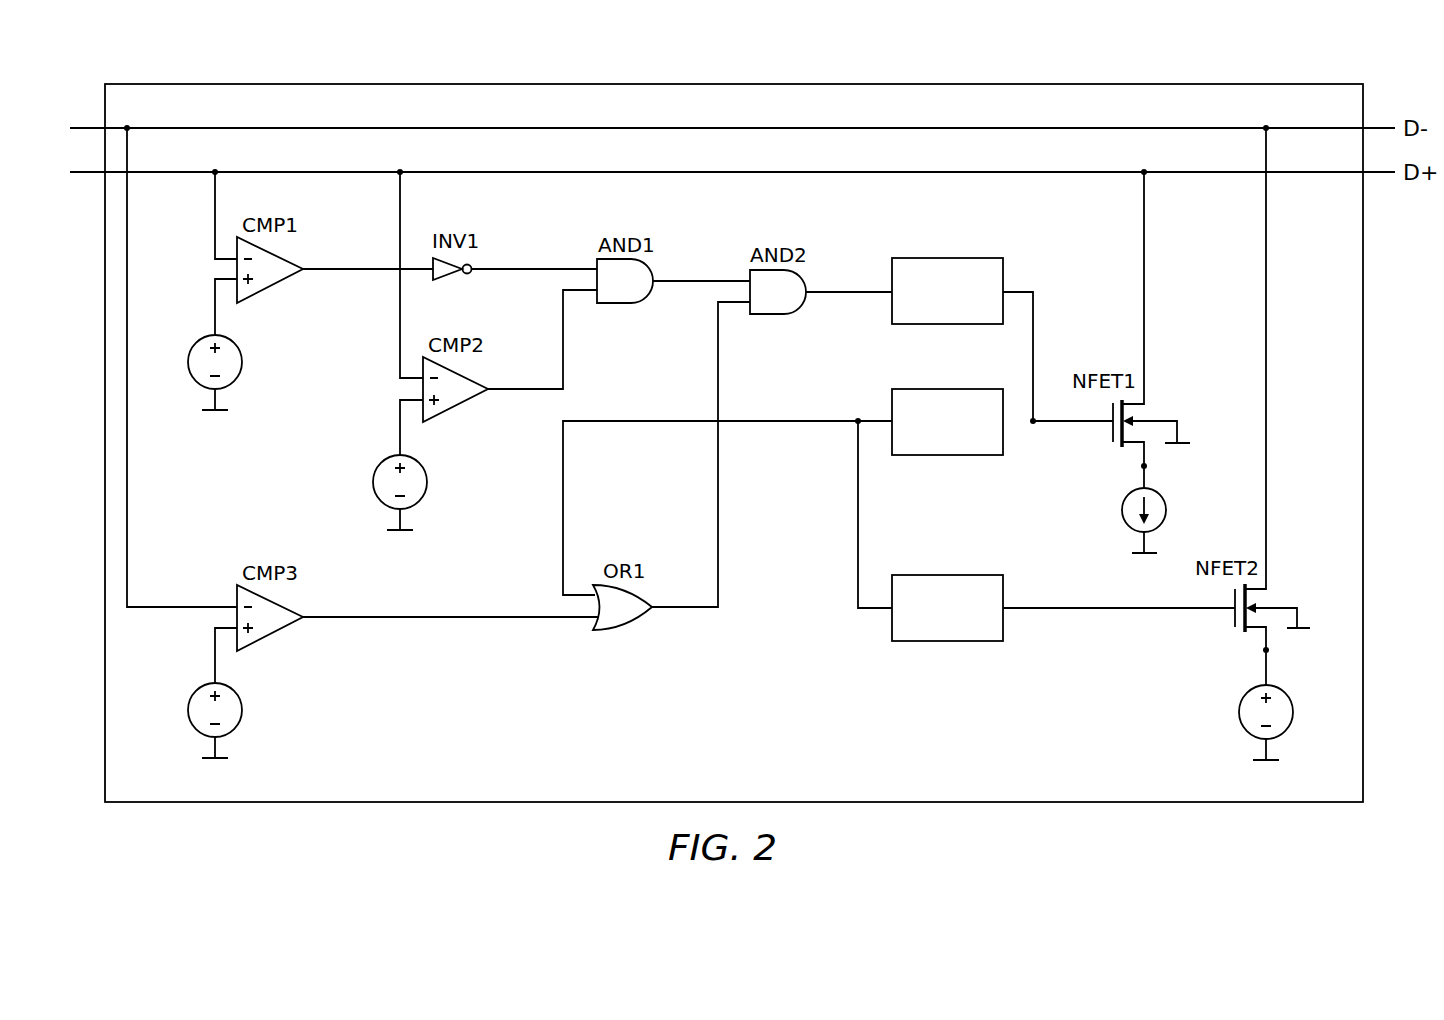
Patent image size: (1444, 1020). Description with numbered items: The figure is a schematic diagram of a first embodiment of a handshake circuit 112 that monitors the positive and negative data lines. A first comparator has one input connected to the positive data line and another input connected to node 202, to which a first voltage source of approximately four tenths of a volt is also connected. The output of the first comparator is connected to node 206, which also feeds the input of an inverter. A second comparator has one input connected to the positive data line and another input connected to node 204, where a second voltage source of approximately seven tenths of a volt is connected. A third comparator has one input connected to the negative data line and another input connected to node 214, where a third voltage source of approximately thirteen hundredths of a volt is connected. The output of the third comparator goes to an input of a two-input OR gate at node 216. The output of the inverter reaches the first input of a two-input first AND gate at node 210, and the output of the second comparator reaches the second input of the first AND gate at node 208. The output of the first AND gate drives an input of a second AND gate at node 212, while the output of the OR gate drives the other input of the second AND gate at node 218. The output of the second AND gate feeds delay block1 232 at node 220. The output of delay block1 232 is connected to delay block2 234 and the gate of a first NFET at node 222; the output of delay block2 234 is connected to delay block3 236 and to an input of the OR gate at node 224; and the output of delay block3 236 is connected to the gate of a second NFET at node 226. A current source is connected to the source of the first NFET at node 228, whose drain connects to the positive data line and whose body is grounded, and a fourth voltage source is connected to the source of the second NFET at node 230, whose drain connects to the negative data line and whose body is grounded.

The first handshake circuit 112 is at (484, 80).
The node 202 is at (211, 306).
The node 204 is at (397, 428).
The node 206 is at (358, 267).
The node 208 is at (508, 392).
The node 210 is at (529, 268).
The node 212 is at (688, 279).
The node 214 is at (212, 655).
The node 216 is at (398, 619).
The node 218 is at (678, 610).
The node 220 is at (836, 295).
The node 222 is at (1037, 333).
The node 224 is at (640, 420).
The node 226 is at (1078, 611).
The node 228 is at (1133, 468).
The node 230 is at (1258, 652).
The delay block1 232 is at (946, 257).
The delay block2 234 is at (946, 457).
The delay block3 236 is at (946, 642).